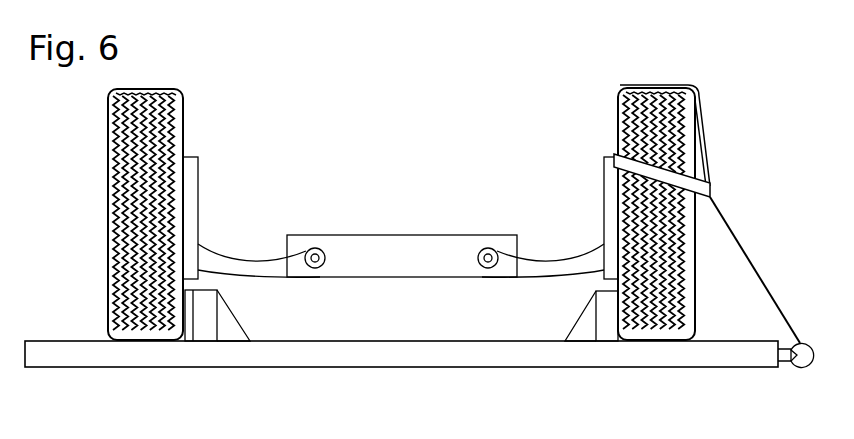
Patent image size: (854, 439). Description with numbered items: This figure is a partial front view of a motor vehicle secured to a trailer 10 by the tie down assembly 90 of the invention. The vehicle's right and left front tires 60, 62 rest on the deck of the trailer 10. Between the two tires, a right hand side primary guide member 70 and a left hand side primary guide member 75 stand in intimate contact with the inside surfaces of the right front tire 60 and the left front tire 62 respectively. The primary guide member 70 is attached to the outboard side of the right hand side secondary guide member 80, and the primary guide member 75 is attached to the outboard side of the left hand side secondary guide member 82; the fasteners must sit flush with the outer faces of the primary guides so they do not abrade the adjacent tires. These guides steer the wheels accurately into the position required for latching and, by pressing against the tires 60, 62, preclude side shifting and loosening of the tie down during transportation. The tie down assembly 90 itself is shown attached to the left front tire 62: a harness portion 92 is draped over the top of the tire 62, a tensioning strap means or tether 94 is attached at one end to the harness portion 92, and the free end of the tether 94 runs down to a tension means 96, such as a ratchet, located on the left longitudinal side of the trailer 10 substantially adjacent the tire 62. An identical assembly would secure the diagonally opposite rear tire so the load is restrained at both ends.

The trailer 10 is at (108, 368).
The right front tire 60 is at (108, 232).
The left front tire 62 is at (695, 240).
The right hand side primary guide member 70 is at (190, 333).
The left hand side primary guide member 75 is at (607, 333).
The right hand side secondary guide member 80 is at (243, 326).
The left hand side secondary guide member 82 is at (572, 326).
The tie down assembly 90 is at (699, 99).
The harness portion 92 is at (712, 178).
The tensioning strap means (tether) 94 is at (778, 297).
The tension means 96 is at (802, 368).